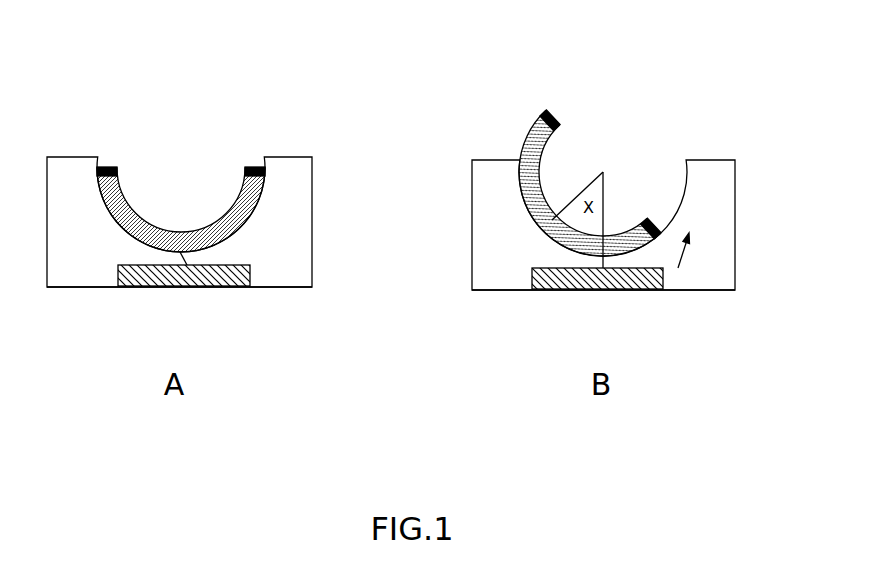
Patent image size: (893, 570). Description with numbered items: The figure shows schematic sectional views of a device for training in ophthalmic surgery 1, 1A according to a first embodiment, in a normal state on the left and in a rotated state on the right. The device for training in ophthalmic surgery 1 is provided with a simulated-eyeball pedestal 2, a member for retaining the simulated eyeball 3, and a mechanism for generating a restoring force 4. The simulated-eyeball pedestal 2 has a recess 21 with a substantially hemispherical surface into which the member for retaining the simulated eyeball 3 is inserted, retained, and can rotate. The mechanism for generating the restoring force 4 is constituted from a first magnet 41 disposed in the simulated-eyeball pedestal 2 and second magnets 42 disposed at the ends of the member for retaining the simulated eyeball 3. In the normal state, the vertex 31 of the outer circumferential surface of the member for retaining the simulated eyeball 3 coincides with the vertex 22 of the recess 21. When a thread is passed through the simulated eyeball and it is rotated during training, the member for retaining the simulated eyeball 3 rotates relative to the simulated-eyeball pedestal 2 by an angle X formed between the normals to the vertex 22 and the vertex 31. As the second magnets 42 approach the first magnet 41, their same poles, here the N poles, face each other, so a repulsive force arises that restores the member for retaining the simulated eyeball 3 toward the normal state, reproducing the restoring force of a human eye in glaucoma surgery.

The device for training in ophthalmic surgery 1 is at (160, 44).
The device for training in ophthalmic surgery 1A is at (410, 180).
The simulated-eyeball pedestal 2 is at (298, 208).
The recess 21 is at (193, 178).
The vertex of the recess 22 is at (215, 287).
The member for retaining the simulated eyeball 3 is at (130, 198).
The vertex of the outer circumferential surface 31 is at (538, 236).
The mechanism for generating a restoring force 4 is at (102, 167).
The first magnet 41 is at (148, 286).
The second magnets 42 is at (258, 167).